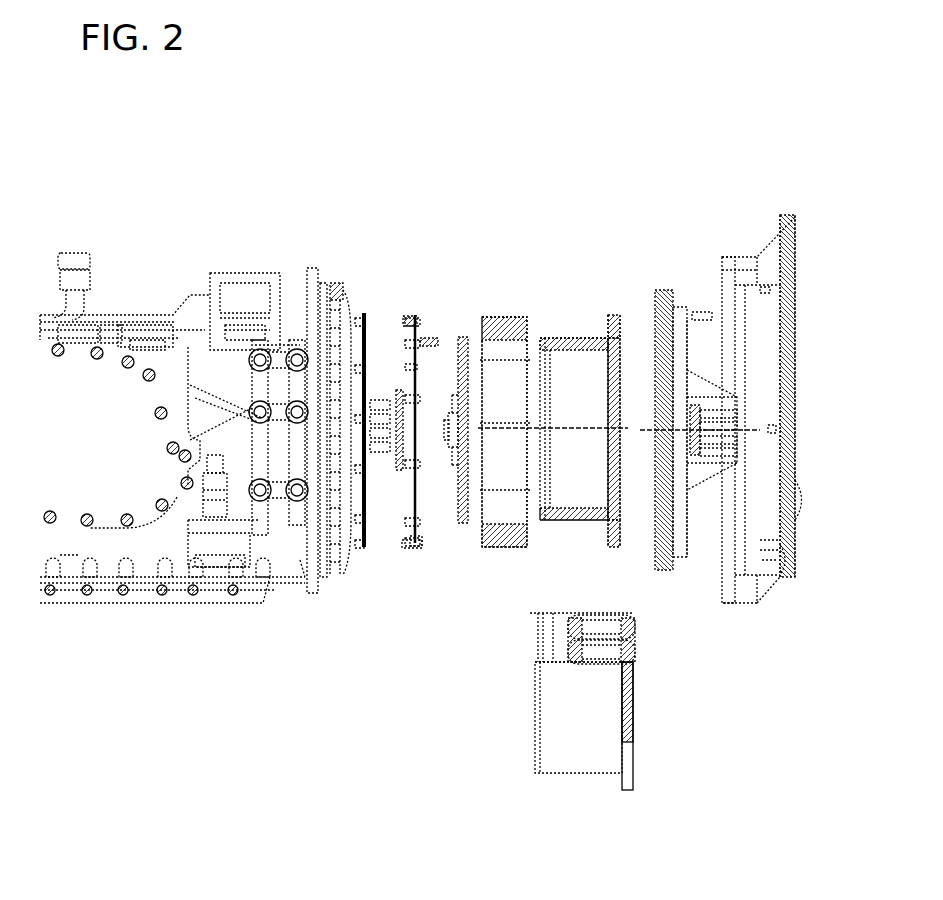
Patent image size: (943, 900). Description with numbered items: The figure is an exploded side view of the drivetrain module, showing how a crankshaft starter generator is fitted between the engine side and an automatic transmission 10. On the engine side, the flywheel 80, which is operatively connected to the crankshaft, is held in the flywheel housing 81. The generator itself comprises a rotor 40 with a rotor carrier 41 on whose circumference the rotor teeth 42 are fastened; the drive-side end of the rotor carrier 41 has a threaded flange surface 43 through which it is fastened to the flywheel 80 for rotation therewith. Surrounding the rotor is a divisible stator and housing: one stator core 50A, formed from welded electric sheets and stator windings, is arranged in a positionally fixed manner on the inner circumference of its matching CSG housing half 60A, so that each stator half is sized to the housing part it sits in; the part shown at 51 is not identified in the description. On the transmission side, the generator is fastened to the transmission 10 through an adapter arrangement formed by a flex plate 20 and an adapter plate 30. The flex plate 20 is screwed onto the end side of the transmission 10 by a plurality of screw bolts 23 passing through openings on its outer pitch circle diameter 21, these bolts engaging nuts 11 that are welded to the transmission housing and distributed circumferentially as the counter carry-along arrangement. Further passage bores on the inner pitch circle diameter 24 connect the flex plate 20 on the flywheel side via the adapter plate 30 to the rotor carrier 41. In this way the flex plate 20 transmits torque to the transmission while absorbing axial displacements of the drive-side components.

The automatic transmission 10 is at (135, 310).
The nuts 11 is at (362, 322).
The flex plate 20 is at (418, 327).
The outer pitch circle diameter 21 is at (427, 543).
The screw bolts 23 is at (405, 550).
The inner pitch circle diameter 24 is at (398, 360).
The adapter plate 30 is at (463, 335).
The rotor 40 is at (535, 268).
The rotor carrier 41 is at (590, 330).
The rotor teeth 42 is at (490, 327).
The flange surface 43 is at (613, 323).
The stator core 50A is at (548, 632).
The bellows 51 is at (635, 630).
The CSG housing half 60A is at (590, 757).
The flywheel 80 is at (665, 290).
The flywheel housing 81 is at (764, 252).